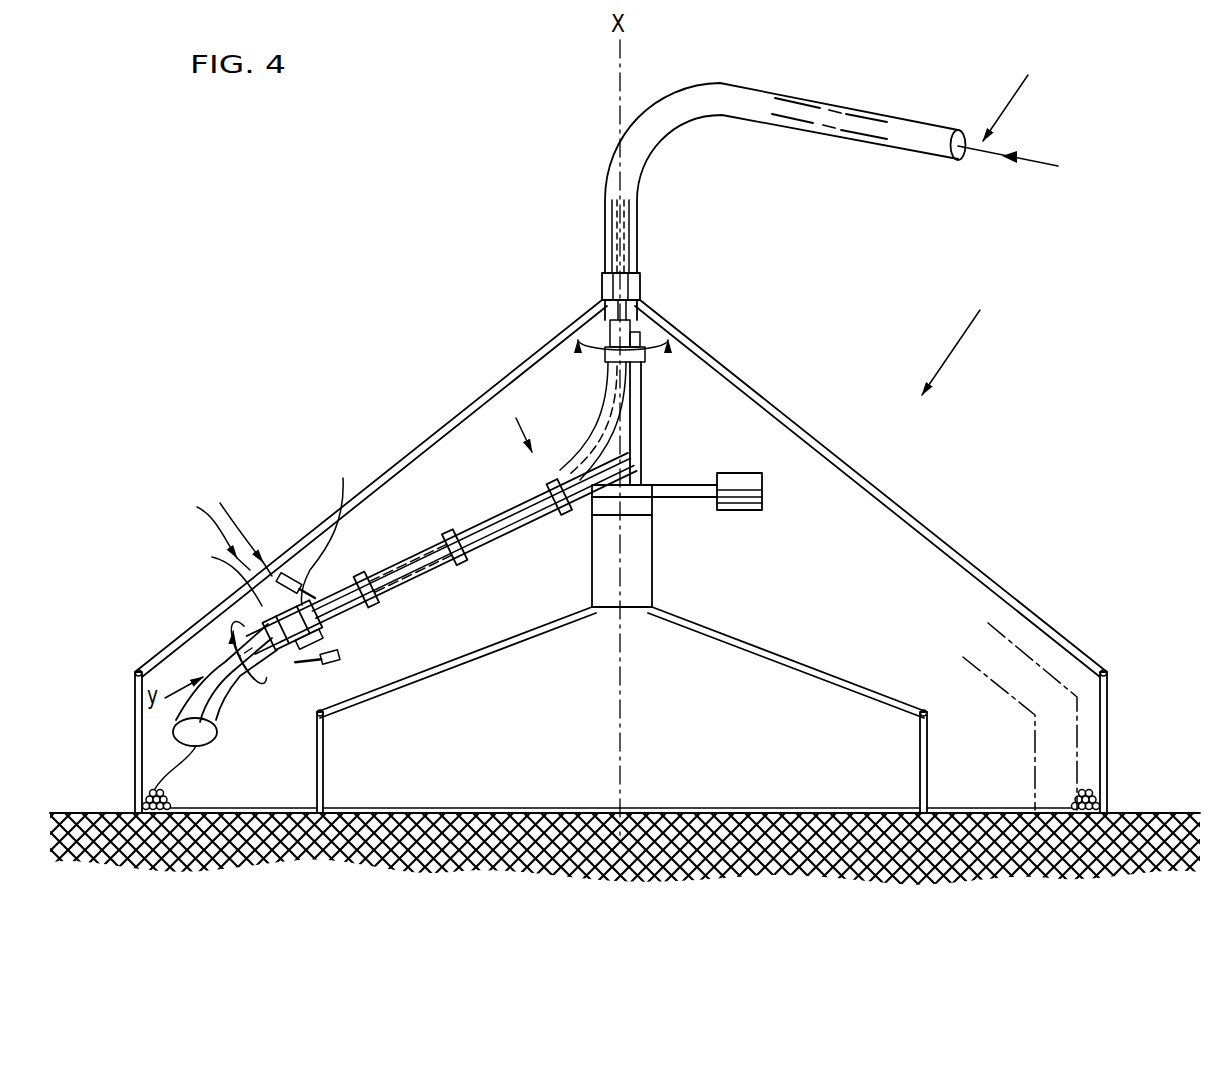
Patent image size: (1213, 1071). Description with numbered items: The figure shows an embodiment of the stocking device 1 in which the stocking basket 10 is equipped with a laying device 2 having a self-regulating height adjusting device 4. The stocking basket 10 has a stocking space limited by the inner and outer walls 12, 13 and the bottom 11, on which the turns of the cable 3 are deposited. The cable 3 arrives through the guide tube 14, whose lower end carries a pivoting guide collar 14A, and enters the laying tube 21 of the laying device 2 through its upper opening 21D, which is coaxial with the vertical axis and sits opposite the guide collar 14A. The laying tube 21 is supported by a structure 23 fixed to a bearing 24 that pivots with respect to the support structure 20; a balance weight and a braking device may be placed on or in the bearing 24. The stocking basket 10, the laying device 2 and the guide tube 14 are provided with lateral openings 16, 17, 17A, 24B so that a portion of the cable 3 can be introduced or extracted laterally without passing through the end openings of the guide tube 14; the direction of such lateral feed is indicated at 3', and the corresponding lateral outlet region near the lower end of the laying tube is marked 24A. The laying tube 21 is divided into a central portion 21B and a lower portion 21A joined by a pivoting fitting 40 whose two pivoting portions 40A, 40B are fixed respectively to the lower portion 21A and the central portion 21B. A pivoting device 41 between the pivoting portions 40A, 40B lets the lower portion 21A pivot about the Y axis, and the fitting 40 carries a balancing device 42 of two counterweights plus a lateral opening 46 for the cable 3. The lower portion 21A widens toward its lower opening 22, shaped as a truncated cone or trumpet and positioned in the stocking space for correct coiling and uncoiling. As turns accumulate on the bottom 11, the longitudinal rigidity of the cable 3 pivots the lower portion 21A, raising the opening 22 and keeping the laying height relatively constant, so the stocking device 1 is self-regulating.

The stocking device 1 is at (960, 336).
The laying device 2 is at (519, 421).
The cable 3 is at (588, 758).
The material supply 3' is at (1008, 105).
The height adjusting device 4 is at (243, 527).
The stocking basket 10 is at (925, 661).
The bottom 11 is at (264, 806).
The inner wall 12 is at (437, 419).
The outer wall 13 is at (328, 759).
The guide tube 14 is at (683, 96).
The pivoting guide collar 14A is at (636, 291).
The lateral opening 16 is at (1013, 673).
The lateral opening 17 is at (862, 129).
The lateral opening 17A is at (612, 230).
The support structure 20 is at (790, 656).
The laying tube 21 is at (483, 513).
The lower portion 21A is at (243, 658).
The central portion 21B is at (366, 556).
The upper opening 21D is at (640, 329).
The lower opening 22 is at (204, 748).
The structure 23 is at (641, 416).
The bearing 24 is at (648, 506).
The flexible outlet hose 24A is at (241, 649).
The lateral opening 24B is at (598, 438).
The pivoting fitting 40 is at (208, 528).
The pivoting portion 40A is at (214, 573).
The pivoting portion 40B is at (330, 524).
The pivoting device 41 is at (320, 633).
The balancing device 42 is at (288, 571).
The lateral opening 46 is at (300, 651).